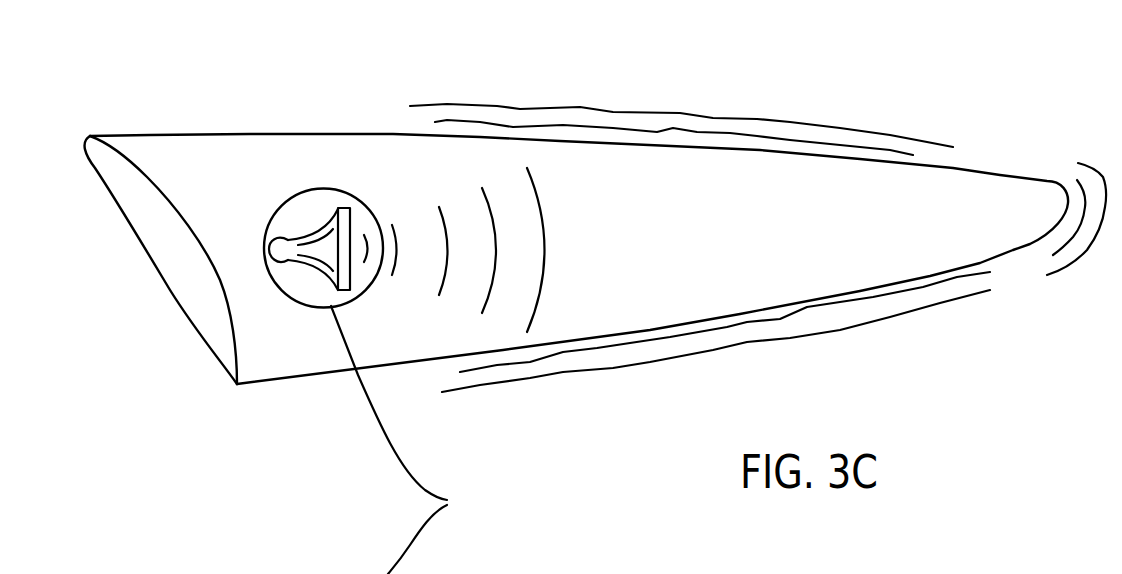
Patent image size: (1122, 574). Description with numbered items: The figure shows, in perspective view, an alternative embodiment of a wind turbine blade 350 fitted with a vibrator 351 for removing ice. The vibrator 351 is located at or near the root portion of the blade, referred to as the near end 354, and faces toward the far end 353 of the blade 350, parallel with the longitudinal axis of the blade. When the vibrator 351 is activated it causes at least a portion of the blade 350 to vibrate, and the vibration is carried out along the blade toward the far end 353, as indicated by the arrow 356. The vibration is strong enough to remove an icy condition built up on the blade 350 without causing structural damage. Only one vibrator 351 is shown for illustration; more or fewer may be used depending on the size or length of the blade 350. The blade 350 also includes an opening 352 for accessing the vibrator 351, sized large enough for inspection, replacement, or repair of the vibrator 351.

The blade 350 is at (761, 283).
The vibrator 351 is at (305, 234).
The opening 352 is at (412, 440).
The far end 353 is at (1024, 283).
The near end 354 is at (136, 283).
The arrow 356 is at (758, 387).